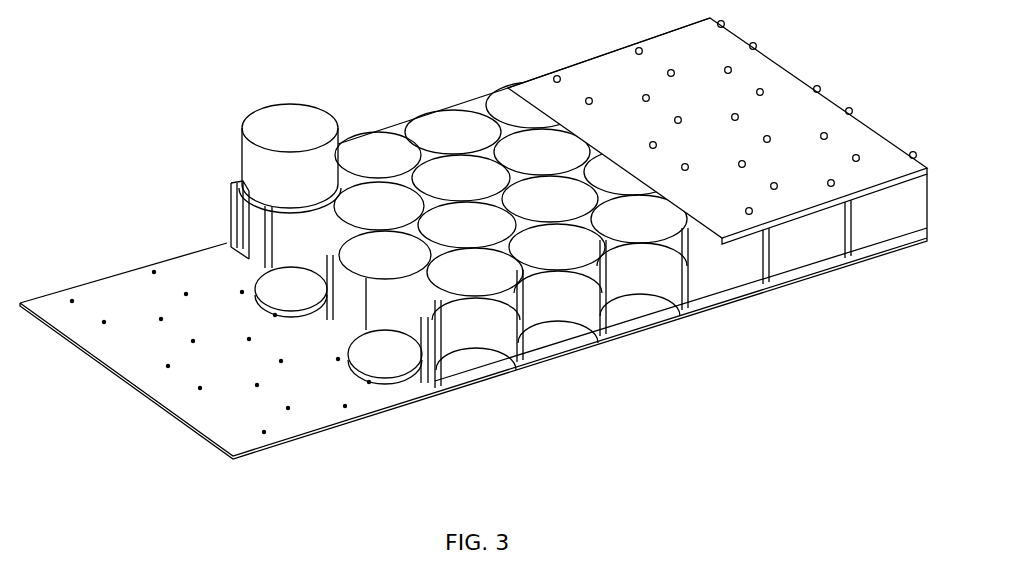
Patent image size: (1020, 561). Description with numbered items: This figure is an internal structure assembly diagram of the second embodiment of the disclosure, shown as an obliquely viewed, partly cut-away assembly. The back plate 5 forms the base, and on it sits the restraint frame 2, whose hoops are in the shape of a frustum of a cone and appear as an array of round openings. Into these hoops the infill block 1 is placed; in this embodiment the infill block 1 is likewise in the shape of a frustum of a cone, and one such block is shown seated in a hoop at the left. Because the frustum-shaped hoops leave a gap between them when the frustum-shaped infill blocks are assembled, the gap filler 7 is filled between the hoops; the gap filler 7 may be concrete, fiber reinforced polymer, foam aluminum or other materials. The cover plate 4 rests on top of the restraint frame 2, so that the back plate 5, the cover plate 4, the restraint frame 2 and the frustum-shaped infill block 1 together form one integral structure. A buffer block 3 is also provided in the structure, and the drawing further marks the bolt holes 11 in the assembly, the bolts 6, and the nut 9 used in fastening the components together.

The infill block 1 is at (280, 130).
The restraint frame 2 is at (553, 302).
The buffer block 3 is at (393, 357).
The cover plate 4 is at (625, 72).
The back plate 5 is at (148, 305).
The bolts 6 is at (227, 242).
The gap filler 7 is at (240, 211).
The nut 9 is at (560, 76).
The bolt holes 11 is at (473, 103).